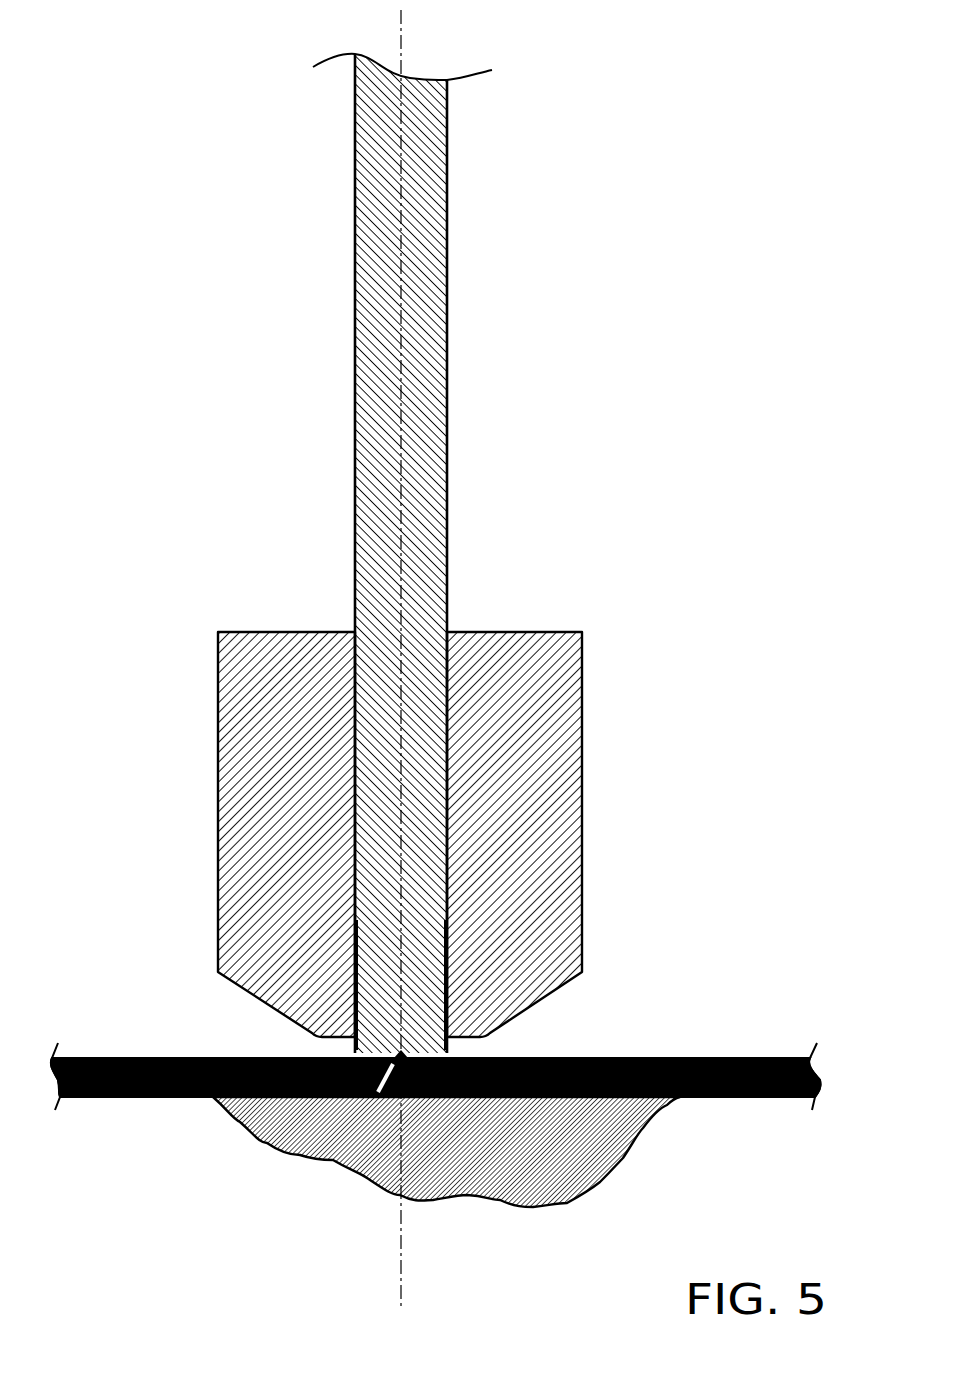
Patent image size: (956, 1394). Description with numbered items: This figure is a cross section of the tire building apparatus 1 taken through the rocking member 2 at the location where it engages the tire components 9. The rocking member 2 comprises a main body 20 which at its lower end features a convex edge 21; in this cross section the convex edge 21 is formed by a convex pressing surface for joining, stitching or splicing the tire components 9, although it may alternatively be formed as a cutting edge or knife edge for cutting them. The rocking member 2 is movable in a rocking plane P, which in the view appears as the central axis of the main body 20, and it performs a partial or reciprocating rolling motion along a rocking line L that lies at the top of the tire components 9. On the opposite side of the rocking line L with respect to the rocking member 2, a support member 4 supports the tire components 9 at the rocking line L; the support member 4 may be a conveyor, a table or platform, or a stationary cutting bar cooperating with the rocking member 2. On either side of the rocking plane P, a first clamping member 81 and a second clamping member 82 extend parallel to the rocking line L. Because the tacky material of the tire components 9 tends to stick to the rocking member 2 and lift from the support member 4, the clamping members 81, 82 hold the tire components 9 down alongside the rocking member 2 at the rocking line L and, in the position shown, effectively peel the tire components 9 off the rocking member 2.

The tire building apparatus 1 is at (203, 80).
The rocking member 2 is at (398, 553).
The main body 20 is at (432, 490).
The convex edge 21 is at (450, 1052).
The first clamping member 81 is at (560, 833).
The second clamping member 82 is at (245, 800).
The tire components 9 is at (110, 1100).
The support member 4 is at (577, 1163).
The rocking line L is at (355, 1052).
The rocking plane P is at (401, 680).